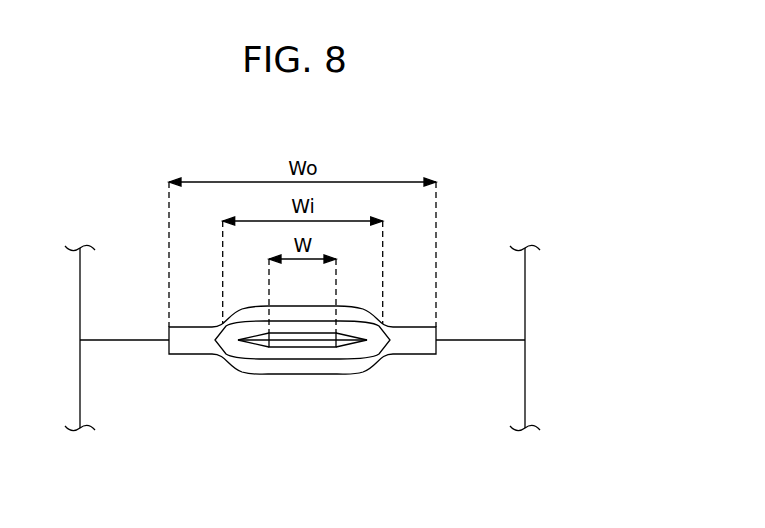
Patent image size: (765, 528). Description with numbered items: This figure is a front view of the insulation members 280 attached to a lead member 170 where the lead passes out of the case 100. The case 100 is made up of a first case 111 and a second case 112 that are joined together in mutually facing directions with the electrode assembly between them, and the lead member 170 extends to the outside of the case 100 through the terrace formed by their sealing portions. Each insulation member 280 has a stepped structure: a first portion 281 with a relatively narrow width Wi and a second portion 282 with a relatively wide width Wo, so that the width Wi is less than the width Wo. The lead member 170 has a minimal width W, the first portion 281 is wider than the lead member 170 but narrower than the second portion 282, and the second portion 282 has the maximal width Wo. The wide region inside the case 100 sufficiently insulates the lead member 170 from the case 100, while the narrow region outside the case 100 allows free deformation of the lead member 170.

The case 100 is at (643, 293).
The first case 111 is at (517, 298).
The second case 112 is at (517, 381).
The lead member 170 is at (297, 340).
The insulation member 280 is at (338, 452).
The first portion 281 is at (352, 352).
The second portion 282 is at (413, 350).